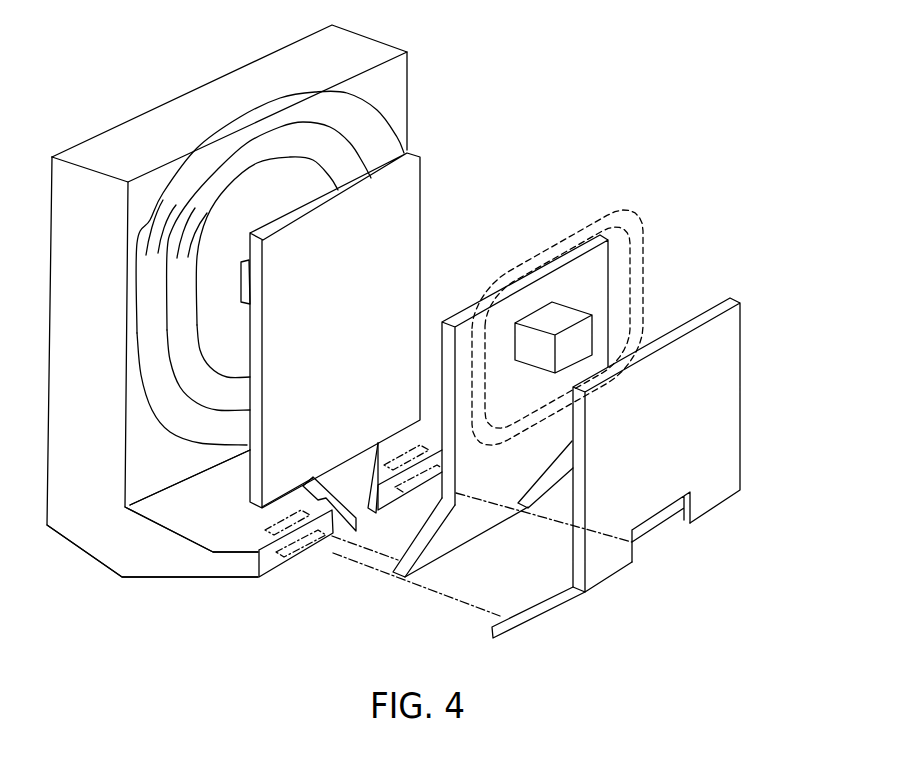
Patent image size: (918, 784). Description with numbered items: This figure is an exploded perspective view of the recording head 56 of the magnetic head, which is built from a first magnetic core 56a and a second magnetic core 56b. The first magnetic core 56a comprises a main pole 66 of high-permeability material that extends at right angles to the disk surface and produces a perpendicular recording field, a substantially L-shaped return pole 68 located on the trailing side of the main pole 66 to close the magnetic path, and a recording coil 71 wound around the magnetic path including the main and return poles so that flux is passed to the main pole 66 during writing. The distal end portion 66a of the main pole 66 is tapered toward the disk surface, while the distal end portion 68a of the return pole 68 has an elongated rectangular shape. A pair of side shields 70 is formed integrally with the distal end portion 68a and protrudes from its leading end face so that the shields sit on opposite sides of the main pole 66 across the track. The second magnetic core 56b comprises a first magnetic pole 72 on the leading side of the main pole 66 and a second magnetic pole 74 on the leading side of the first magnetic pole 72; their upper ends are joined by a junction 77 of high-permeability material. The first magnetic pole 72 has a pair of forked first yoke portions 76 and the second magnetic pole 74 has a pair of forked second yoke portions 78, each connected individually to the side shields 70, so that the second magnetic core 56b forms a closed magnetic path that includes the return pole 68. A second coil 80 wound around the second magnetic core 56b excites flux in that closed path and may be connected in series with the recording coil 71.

The recording head 56 is at (534, 107).
The first magnetic core 56a is at (434, 64).
The second magnetic core 56b is at (678, 279).
The main pole 66 is at (421, 199).
The distal end portion of the main pole 66a is at (360, 524).
The return pole 68 is at (197, 104).
The distal end portion of the return pole 68a is at (167, 580).
The side shields 70 is at (270, 566).
The recording coil 71 is at (288, 117).
The first magnetic pole 72 is at (465, 333).
The second magnetic pole 74 is at (731, 423).
The first yoke portions 76 is at (437, 548).
The junction 77 is at (557, 317).
The second yoke portions 78 is at (527, 613).
The second coil 80 is at (603, 213).